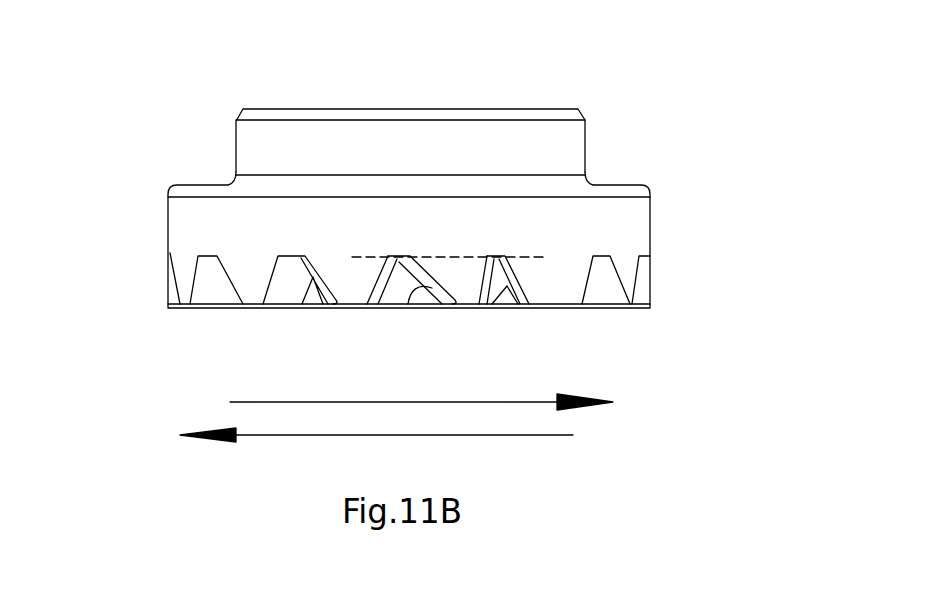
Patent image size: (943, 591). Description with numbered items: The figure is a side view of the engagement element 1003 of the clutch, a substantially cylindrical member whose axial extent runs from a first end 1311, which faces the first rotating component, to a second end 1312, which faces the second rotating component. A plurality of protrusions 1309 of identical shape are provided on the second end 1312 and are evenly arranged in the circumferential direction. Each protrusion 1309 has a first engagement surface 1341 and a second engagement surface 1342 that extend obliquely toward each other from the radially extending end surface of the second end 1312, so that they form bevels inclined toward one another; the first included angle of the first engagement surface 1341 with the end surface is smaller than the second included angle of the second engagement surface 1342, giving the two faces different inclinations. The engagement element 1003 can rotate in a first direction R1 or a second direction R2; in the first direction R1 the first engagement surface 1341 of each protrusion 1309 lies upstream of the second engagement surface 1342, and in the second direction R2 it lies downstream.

The engagement element 1003 is at (728, 62).
The first end 1311 is at (246, 109).
The second end 1312 is at (185, 260).
The protrusion 1309 is at (458, 275).
The first engagement surface 1341 is at (407, 303).
The second engagement surface 1342 is at (498, 303).
The first direction R1 is at (421, 387).
The second direction R2 is at (376, 451).